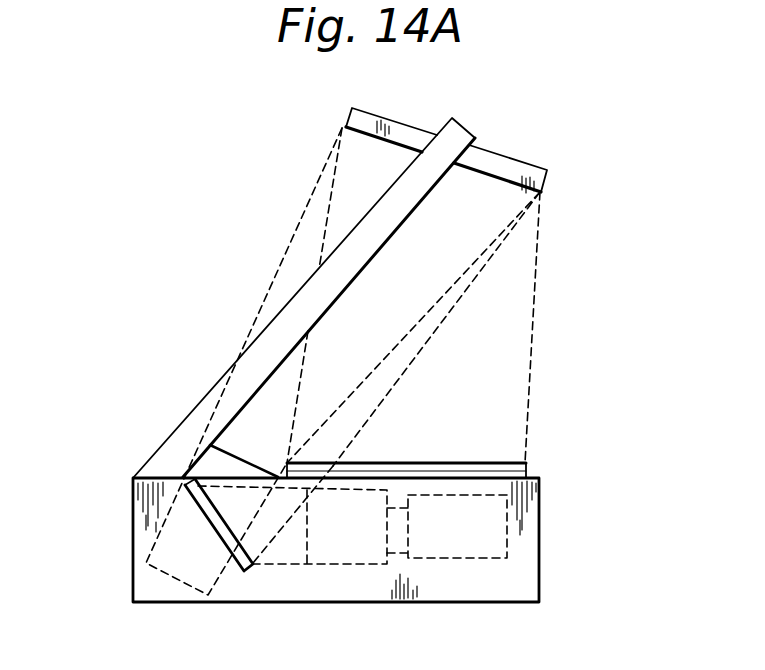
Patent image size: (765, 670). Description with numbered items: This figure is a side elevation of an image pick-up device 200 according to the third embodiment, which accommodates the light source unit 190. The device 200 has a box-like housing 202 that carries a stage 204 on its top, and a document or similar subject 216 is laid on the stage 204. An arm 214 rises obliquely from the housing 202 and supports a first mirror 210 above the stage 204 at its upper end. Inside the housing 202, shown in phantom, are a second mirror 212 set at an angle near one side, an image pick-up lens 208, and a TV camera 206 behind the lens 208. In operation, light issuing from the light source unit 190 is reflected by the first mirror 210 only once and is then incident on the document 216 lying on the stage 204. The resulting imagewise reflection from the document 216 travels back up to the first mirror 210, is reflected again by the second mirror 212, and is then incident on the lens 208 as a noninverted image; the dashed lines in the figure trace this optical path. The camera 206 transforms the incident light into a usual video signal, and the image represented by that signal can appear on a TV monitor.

The image pick-up device 200 is at (606, 172).
The housing 202 is at (472, 583).
The stage 204 is at (483, 472).
The TV camera 206 is at (505, 548).
The image pick-up lens 208 is at (507, 499).
The first mirror 210 is at (504, 160).
The second mirror 212 is at (199, 502).
The arm 214 is at (374, 236).
The document 216 is at (427, 462).
The light source unit 190 is at (148, 578).